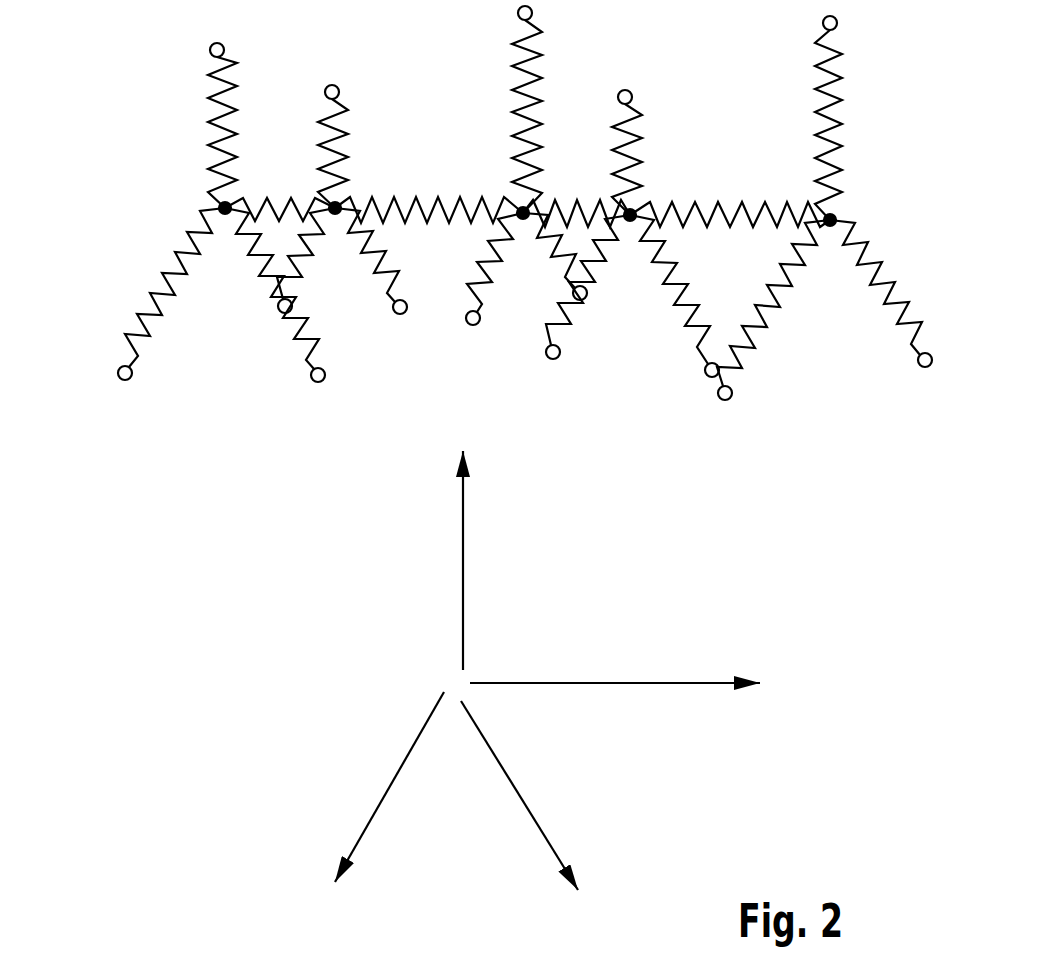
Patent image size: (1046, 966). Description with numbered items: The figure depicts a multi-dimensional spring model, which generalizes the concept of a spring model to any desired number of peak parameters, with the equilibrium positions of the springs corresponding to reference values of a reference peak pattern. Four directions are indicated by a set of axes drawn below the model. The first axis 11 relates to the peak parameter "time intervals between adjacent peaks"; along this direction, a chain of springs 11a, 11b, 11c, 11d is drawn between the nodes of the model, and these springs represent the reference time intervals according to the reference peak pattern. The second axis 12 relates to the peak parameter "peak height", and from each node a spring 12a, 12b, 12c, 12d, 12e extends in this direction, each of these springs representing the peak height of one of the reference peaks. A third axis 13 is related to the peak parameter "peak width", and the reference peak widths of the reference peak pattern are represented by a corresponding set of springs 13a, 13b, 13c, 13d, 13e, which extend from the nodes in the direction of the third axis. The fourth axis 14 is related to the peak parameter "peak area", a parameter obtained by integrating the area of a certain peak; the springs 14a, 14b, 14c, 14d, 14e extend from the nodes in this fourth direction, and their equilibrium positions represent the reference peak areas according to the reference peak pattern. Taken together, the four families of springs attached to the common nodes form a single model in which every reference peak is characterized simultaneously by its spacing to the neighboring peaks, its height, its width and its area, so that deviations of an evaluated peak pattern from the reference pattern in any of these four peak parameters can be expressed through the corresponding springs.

The first axis 11 is at (680, 683).
The second axis 12 is at (465, 538).
The third axis 13 is at (533, 820).
The fourth axis 14 is at (372, 818).
The spring 11a is at (260, 198).
The spring 11b is at (392, 198).
The spring 11c is at (555, 200).
The spring 11d is at (693, 202).
The spring 12a is at (237, 63).
The spring 12b is at (348, 110).
The spring 12c is at (542, 32).
The spring 12d is at (642, 115).
The spring 12e is at (842, 54).
The spring 13a is at (325, 352).
The spring 13b is at (380, 307).
The spring 13c is at (573, 291).
The spring 13d is at (703, 362).
The spring 13e is at (893, 355).
The spring 14a is at (130, 360).
The spring 14b is at (280, 290).
The spring 14c is at (497, 293).
The spring 14d is at (563, 333).
The spring 14e is at (757, 370).